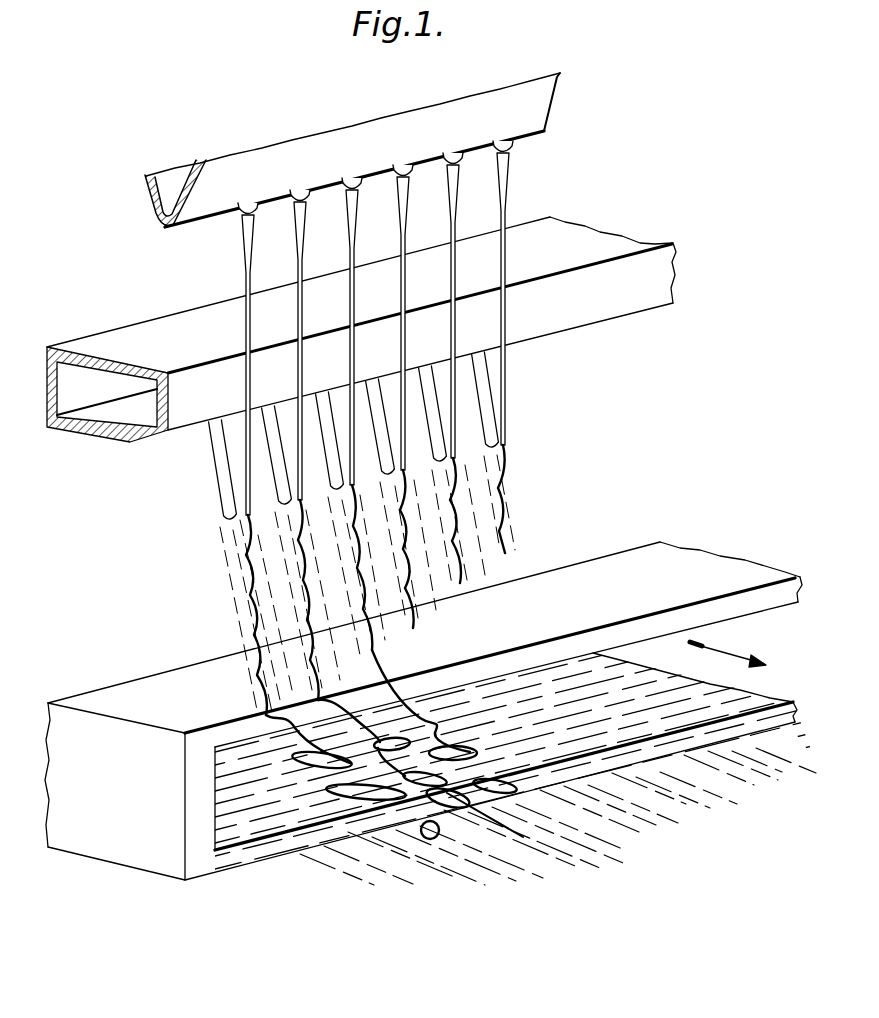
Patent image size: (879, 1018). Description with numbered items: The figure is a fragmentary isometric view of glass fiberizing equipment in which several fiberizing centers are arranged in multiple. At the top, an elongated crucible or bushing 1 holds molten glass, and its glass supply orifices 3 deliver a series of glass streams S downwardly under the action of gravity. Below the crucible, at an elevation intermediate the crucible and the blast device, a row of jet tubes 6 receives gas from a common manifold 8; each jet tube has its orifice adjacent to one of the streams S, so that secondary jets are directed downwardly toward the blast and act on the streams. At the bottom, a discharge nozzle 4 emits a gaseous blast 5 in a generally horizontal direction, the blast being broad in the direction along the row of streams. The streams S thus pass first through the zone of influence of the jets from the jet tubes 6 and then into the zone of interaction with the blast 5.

The crucible 1 is at (146, 194).
The glass supply orifices 3 is at (354, 462).
The glass streams S is at (297, 262).
The manifold 8 is at (117, 342).
The jet tubes 6 is at (273, 460).
The discharge nozzle 4 is at (126, 848).
The blast 5 is at (734, 659).